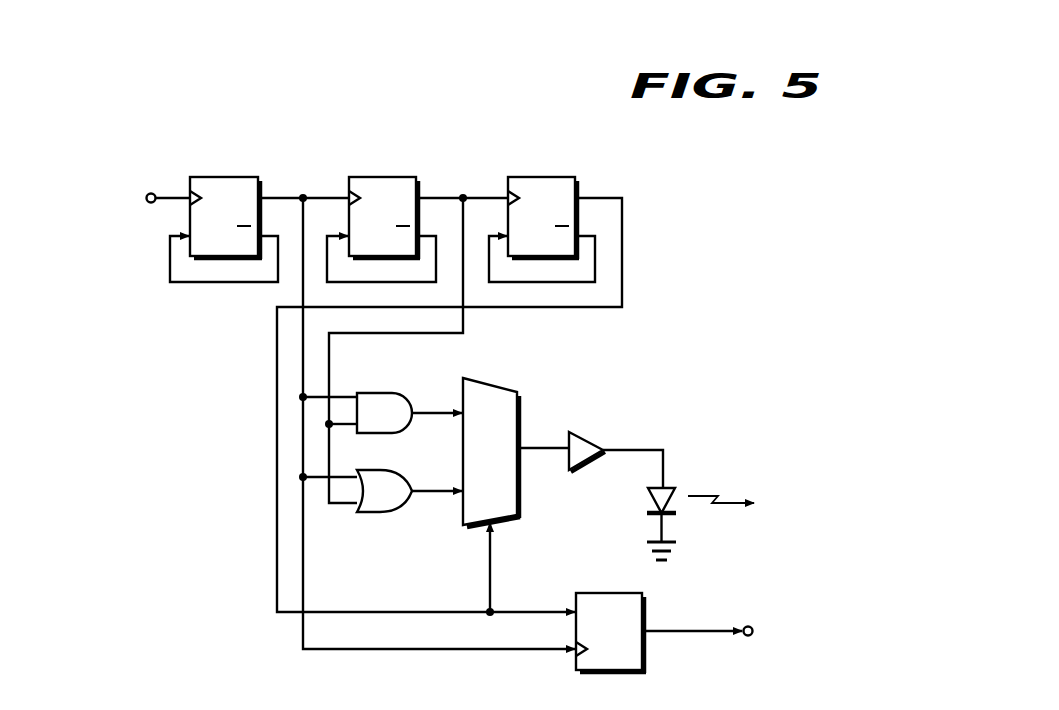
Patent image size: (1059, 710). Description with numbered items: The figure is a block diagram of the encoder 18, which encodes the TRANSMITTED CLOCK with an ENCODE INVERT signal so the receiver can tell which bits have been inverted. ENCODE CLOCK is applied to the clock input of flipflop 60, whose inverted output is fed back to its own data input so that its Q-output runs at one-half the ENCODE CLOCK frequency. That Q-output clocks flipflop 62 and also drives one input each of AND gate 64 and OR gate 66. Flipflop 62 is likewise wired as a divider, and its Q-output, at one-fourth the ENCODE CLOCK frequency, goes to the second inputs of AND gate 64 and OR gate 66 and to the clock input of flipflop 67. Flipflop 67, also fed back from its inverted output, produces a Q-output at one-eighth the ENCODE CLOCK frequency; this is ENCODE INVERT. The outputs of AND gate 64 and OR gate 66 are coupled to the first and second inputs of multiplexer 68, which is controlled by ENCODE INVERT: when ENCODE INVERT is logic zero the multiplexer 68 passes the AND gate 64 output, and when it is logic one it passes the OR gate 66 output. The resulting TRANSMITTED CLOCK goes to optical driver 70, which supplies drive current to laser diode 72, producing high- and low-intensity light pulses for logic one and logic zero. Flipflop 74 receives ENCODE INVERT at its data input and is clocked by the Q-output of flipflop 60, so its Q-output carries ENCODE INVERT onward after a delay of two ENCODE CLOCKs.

The encoder 18 is at (733, 163).
The flipflop 60 is at (232, 176).
The flipflop 62 is at (388, 176).
The flipflop 67 is at (550, 176).
The AND gate 64 is at (388, 392).
The OR gate 66 is at (383, 513).
The multiplexer 68 is at (498, 388).
The optical driver 70 is at (589, 436).
The laser diode 72 is at (646, 505).
The flipflop 74 is at (598, 592).